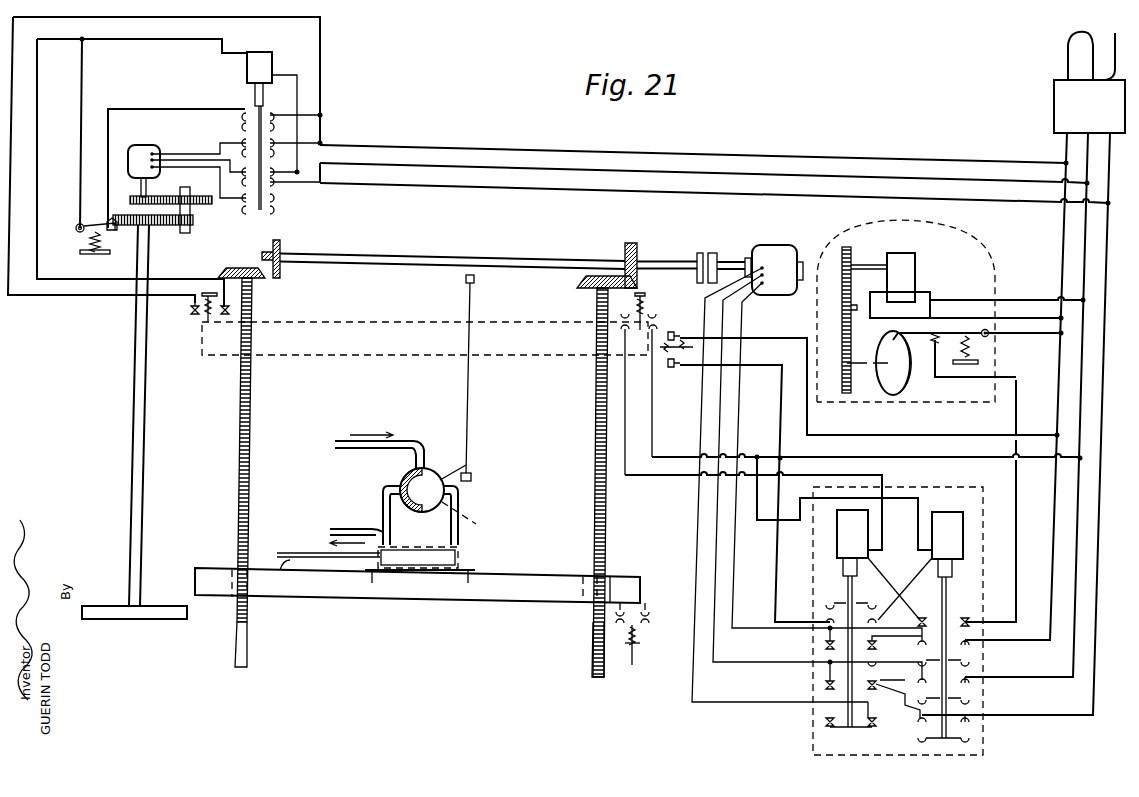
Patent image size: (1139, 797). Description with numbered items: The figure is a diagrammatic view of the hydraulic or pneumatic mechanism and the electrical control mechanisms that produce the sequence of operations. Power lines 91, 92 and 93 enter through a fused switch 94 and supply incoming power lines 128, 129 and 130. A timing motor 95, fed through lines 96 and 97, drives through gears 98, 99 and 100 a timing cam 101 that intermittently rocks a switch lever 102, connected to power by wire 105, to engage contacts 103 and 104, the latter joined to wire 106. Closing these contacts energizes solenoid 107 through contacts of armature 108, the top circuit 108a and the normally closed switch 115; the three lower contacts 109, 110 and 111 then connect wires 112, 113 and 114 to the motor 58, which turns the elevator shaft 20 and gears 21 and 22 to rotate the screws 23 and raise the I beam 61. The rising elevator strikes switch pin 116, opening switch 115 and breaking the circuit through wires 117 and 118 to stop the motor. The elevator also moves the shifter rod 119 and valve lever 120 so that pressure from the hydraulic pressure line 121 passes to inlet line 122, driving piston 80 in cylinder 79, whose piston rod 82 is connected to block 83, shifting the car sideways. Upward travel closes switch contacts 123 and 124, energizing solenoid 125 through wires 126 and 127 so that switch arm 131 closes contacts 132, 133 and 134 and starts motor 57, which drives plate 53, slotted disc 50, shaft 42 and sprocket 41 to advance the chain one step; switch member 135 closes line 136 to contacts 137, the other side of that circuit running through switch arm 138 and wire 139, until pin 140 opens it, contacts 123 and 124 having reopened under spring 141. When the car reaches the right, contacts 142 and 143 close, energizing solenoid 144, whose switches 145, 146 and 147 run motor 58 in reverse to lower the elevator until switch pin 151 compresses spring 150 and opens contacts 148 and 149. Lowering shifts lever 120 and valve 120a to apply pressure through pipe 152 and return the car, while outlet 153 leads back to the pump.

The elevator shaft 20 is at (395, 254).
The gear 21 is at (280, 247).
The gear 22 is at (241, 268).
The screws 23 is at (253, 418).
The sprocket 41 is at (160, 606).
The shaft 42 is at (146, 438).
The slotted disc 50 is at (157, 235).
The plate 53 is at (195, 222).
The motor 57 is at (145, 145).
The motor 58 is at (780, 252).
The I beam 61 is at (370, 340).
The cylinder 79 is at (460, 554).
The piston 80 is at (400, 572).
The piston rod 82 is at (308, 553).
The block 83 is at (283, 572).
The power line 91 is at (1067, 60).
The power line 92 is at (1066, 34).
The power line 93 is at (1089, 83).
The fused switch 94 is at (1060, 102).
The timing motor 95 is at (916, 266).
The line 96 is at (1008, 300).
The line 97 is at (1012, 318).
The gear 98 is at (852, 250).
The gear 99 is at (843, 305).
The gear 100 is at (833, 378).
The timing cam 101 is at (893, 395).
The switch lever 102 is at (927, 332).
The contact 103 is at (933, 340).
The contact 104 is at (962, 342).
The wire 105 is at (1012, 333).
The wire 106 is at (1008, 377).
The solenoid 107 is at (858, 530).
The armature 108 is at (952, 572).
The top circuit 108a is at (921, 616).
The contact 109 is at (877, 648).
The contact 110 is at (862, 682).
The contact 111 is at (840, 728).
The wire 112 is at (752, 628).
The wire 113 is at (752, 662).
The wire 114 is at (738, 702).
The normally closed switch 115 is at (644, 312).
The switch pin 116 is at (654, 316).
The wire 117 is at (654, 413).
The wire 118 is at (626, 455).
The shifter rod 119 is at (470, 391).
The valve lever 120 is at (472, 472).
The valve 120a is at (438, 470).
The hydraulic pressure line 121 is at (410, 441).
The inlet line 122 is at (386, 488).
The switch contact 123 is at (194, 315).
The switch contact 124 is at (229, 313).
The solenoid 125 is at (266, 62).
The wire 126 is at (90, 297).
The wire 127 is at (80, 279).
The incoming power line 128 is at (456, 148).
The incoming power line 129 is at (458, 168).
The incoming power line 130 is at (460, 190).
The switch arm 131 is at (256, 106).
The contact 132 is at (276, 150).
The contact 133 is at (274, 182).
The contact 134 is at (274, 210).
The switch member 135 is at (244, 125).
The line 136 is at (147, 109).
The contacts 137 is at (108, 216).
The switch arm 138 is at (76, 231).
The wire 139 is at (82, 140).
The pin 140 is at (102, 244).
The spring 141 is at (203, 294).
The switch contact 142 is at (678, 366).
The switch contact 143 is at (678, 334).
The solenoid 144 is at (947, 512).
The switch 145 is at (970, 662).
The switch 146 is at (970, 700).
The switch 147 is at (970, 738).
The switch contact 148 is at (600, 617).
The switch contact 149 is at (650, 614).
The spring 150 is at (640, 643).
The switch pin 151 is at (630, 673).
The pipe 152 is at (460, 514).
The outlet 153 is at (355, 528).